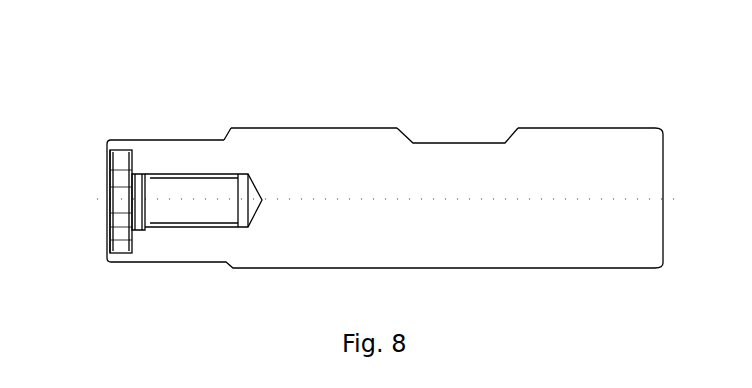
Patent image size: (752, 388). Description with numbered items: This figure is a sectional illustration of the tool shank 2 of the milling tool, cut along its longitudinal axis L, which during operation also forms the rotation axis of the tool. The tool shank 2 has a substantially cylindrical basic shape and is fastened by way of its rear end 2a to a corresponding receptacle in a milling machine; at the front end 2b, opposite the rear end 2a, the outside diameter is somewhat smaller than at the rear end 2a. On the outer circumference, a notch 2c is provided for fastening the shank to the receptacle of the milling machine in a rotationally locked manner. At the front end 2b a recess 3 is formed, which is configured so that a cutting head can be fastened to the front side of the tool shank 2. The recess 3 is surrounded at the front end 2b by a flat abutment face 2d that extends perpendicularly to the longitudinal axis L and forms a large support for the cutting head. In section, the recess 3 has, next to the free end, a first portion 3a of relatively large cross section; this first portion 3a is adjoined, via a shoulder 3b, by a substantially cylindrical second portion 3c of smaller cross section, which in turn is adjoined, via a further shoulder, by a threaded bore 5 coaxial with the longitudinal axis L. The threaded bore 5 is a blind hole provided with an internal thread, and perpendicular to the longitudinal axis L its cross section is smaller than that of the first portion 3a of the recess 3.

The tool shank 2 is at (258, 58).
The rear end 2a is at (630, 153).
The front end 2b is at (148, 148).
The notch 2c is at (466, 143).
The flat abutment face 2d is at (110, 258).
The recess 3 is at (80, 213).
The first portion 3a is at (115, 256).
The shoulder 3b is at (133, 242).
The second portion 3c is at (138, 172).
The threaded bore 5 is at (177, 227).
The longitudinal axis L is at (540, 197).